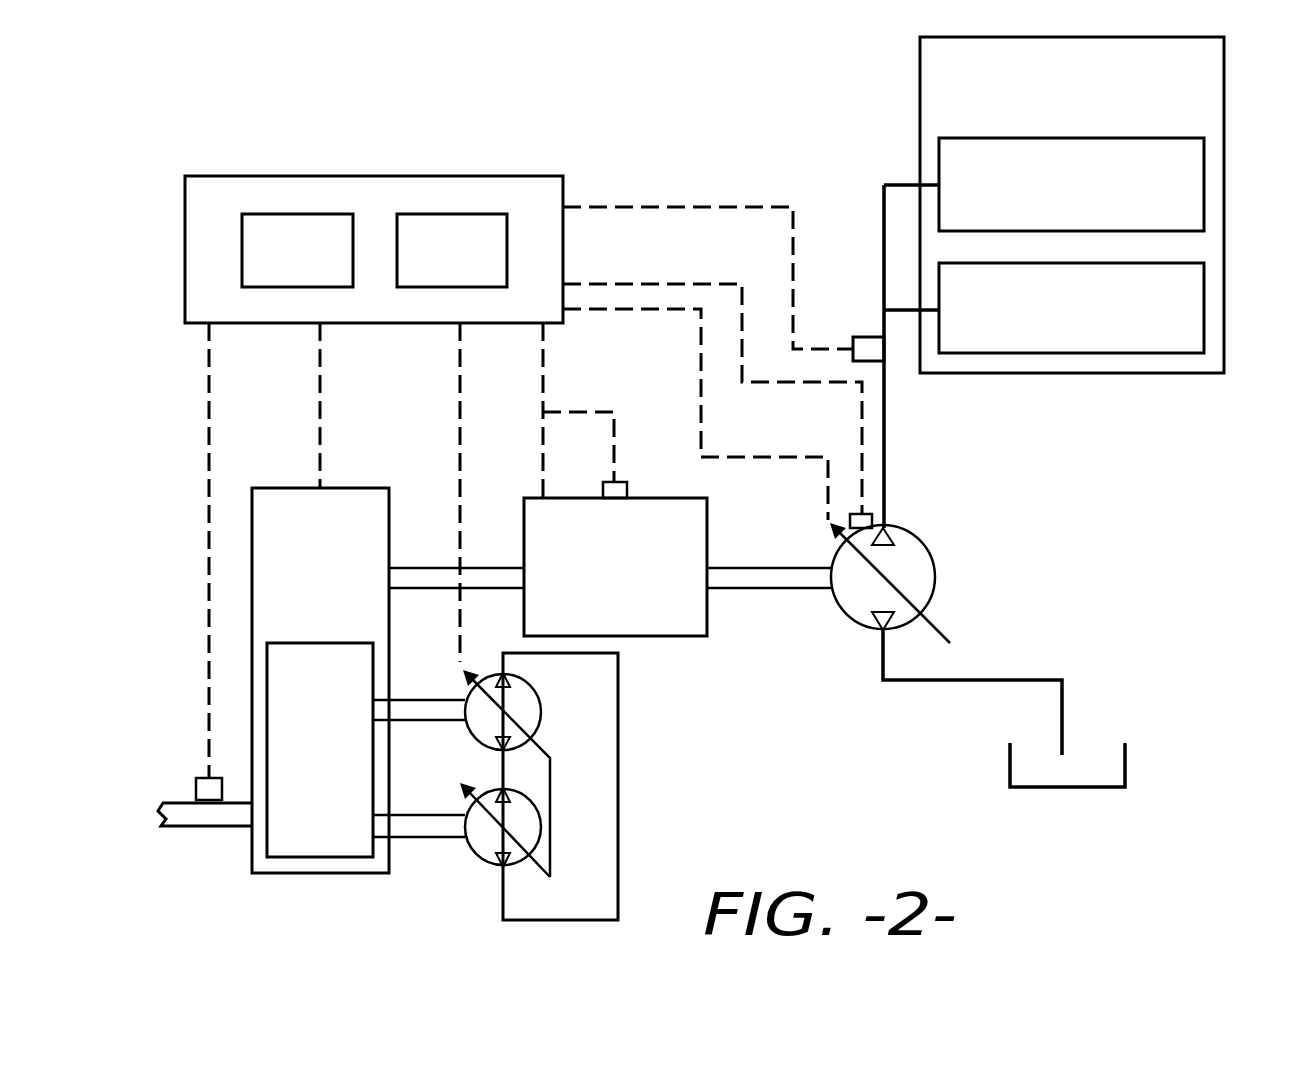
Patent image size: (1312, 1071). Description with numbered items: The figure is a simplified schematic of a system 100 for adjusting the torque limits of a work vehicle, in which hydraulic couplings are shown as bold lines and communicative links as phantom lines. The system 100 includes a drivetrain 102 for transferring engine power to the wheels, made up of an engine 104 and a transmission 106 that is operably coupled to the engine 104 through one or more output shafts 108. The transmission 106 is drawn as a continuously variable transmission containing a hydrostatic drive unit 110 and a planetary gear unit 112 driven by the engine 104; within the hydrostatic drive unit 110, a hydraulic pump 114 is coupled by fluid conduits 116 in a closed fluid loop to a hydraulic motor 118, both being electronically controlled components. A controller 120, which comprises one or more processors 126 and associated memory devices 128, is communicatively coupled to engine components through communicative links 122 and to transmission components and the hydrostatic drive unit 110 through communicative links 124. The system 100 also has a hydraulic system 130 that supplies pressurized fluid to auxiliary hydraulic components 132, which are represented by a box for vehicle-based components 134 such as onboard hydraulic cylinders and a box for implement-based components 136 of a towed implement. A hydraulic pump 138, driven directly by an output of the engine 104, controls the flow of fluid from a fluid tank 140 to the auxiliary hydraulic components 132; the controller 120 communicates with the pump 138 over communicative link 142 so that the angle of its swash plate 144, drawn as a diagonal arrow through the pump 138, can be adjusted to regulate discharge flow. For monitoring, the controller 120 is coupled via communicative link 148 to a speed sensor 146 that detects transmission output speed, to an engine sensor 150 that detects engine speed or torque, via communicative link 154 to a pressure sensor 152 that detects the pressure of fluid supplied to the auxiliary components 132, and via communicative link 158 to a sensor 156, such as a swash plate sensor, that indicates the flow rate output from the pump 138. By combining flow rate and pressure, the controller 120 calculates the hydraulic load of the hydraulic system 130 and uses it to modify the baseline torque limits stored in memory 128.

The system 100 is at (126, 178).
The drivetrain 102 is at (131, 583).
The engine 104 is at (677, 567).
The transmission 106 is at (320, 680).
The output shafts 108 is at (413, 567).
The hydrostatic drive unit 110 is at (657, 767).
The planetary gear unit 112 is at (366, 750).
The hydraulic pump 114 is at (543, 723).
The fluid conduits 116 is at (620, 808).
The hydraulic motor 118 is at (513, 867).
The controller 120 is at (320, 174).
The communicative links 122 is at (545, 392).
The communicative links 124 is at (318, 407).
The processor 126 is at (297, 250).
The memory device 128 is at (452, 250).
The hydraulic system 130 is at (1020, 515).
The auxiliary hydraulic components 132 is at (1228, 96).
The vehicle-based hydraulic components 134 is at (1206, 186).
The implement-based hydraulic components 136 is at (1206, 316).
The hydraulic pump 138 is at (862, 598).
The fluid tank 140 is at (1127, 763).
The communicative link 142 is at (738, 457).
The swash plate 144 is at (838, 548).
The speed sensor 146 is at (203, 789).
The communicative link 148 is at (210, 480).
The engine sensor 150 is at (628, 488).
The pressure sensor 152 is at (870, 337).
The communicative link 154 is at (655, 207).
The sensor 156 is at (863, 513).
The communicative link 158 is at (632, 284).